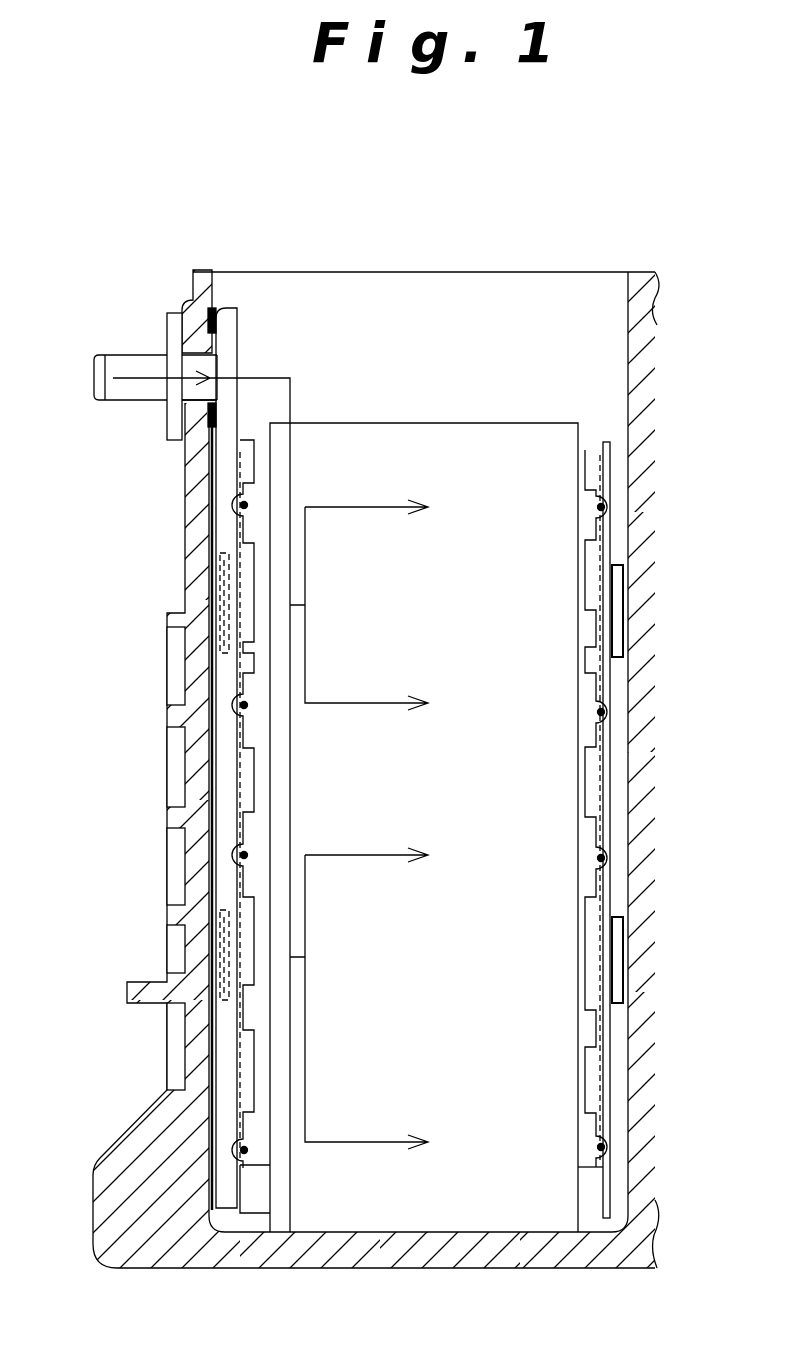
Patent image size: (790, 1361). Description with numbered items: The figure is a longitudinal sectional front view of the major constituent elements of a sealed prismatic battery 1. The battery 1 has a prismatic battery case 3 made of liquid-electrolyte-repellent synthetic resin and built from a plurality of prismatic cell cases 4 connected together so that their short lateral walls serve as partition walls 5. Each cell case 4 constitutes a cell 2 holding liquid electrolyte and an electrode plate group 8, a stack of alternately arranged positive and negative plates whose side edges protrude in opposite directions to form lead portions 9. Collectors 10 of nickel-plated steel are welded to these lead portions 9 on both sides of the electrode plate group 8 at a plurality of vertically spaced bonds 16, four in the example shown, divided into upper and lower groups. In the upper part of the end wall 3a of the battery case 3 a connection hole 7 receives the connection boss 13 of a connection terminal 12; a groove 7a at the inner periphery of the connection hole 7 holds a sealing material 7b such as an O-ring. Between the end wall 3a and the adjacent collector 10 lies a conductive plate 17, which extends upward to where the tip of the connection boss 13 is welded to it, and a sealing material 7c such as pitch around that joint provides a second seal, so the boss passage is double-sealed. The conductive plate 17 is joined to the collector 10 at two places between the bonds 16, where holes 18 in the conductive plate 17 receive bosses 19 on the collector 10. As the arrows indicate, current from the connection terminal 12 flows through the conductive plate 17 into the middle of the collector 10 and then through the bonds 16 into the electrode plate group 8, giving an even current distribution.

The battery 1 is at (138, 1030).
The cell 2 is at (256, 1226).
The prismatic battery case 3 is at (156, 756).
The end wall 3a is at (190, 668).
The cell case 4 is at (432, 379).
The partition wall 5 is at (623, 304).
The connection hole 7 is at (205, 362).
The groove 7a is at (194, 299).
The sealing material 7b is at (180, 310).
The sealing material 7c is at (214, 310).
The electrode plate group 8 is at (426, 807).
The lead portion 9 is at (258, 777).
The collector 10 is at (240, 824).
The connection terminal 12 is at (125, 358).
The connection boss 13 is at (192, 395).
The bond 16 is at (249, 503).
The conductive plate 17 is at (225, 453).
The hole 18 is at (215, 578).
The boss 19 is at (215, 617).